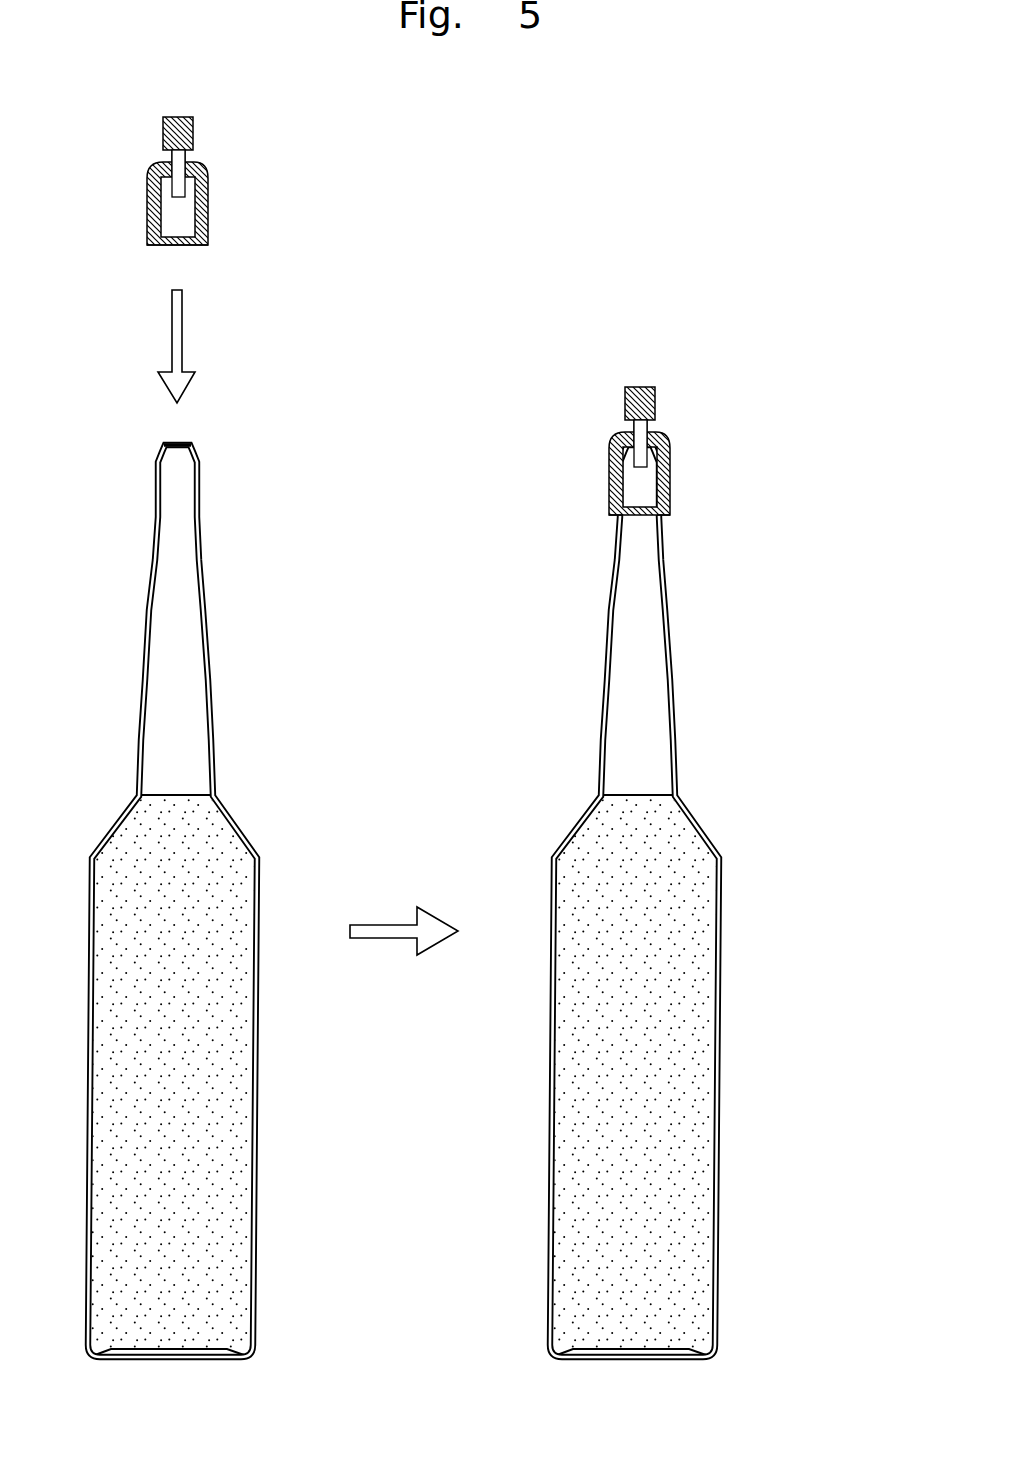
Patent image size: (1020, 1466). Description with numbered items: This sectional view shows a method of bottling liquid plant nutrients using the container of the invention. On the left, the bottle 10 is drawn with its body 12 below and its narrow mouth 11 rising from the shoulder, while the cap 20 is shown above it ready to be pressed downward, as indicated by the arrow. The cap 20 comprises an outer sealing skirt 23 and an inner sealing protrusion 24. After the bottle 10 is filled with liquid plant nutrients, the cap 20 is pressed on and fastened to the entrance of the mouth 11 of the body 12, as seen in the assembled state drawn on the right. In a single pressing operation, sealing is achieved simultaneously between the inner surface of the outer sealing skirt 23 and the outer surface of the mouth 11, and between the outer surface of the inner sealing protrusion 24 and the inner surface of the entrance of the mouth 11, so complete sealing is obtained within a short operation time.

The bottle 10 is at (264, 855).
The mouth 11 is at (199, 470).
The body 12 is at (257, 1108).
The cap 20 is at (221, 187).
The outer sealing skirt 23 is at (148, 216).
The inner sealing protrusion 24 is at (150, 170).